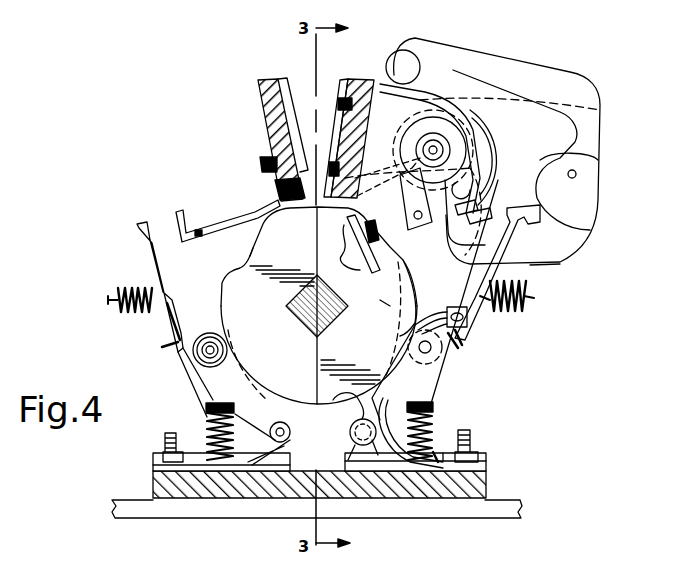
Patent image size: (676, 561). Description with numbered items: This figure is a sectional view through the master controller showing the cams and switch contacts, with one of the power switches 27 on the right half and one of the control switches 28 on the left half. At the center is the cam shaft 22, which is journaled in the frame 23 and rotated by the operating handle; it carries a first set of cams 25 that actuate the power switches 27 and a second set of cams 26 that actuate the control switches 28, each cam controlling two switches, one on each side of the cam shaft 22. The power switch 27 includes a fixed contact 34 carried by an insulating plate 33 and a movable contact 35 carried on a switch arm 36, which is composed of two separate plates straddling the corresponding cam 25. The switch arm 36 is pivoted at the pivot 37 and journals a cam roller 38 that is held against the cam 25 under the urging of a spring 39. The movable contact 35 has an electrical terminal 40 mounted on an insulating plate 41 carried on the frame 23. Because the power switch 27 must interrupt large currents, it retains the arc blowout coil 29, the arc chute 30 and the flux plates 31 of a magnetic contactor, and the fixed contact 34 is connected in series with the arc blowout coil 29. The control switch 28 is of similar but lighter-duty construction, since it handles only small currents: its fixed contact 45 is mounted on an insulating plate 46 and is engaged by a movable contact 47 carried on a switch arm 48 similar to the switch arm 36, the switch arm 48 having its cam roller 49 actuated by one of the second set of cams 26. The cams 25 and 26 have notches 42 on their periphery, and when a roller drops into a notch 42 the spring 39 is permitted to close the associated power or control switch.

The cam shaft 22 is at (340, 300).
The frame 23 is at (168, 518).
The first set of cams 25 is at (407, 290).
The second set of cams 26 is at (232, 290).
The power switches 27 is at (565, 236).
The control switches 28 is at (142, 252).
The arc blowout coil 29 is at (447, 128).
The arc chute 30 is at (558, 76).
The flux plates 31 is at (600, 110).
The insulating plate 33 is at (368, 80).
The fixed contact 34 is at (504, 180).
The movable contact 35 is at (511, 236).
The switch arm 36 is at (440, 392).
The pivot 37 is at (351, 441).
The cam roller 38 is at (441, 349).
The spring 39 is at (206, 426).
The electrical terminal 40 is at (471, 448).
The insulating plate 41 is at (487, 480).
The notches 42 is at (252, 256).
The fixed contact 45 is at (185, 215).
The insulating plate 46 is at (262, 120).
The movable contact 47 is at (160, 203).
The switch arm 48 is at (186, 398).
The cam roller 49 is at (195, 358).